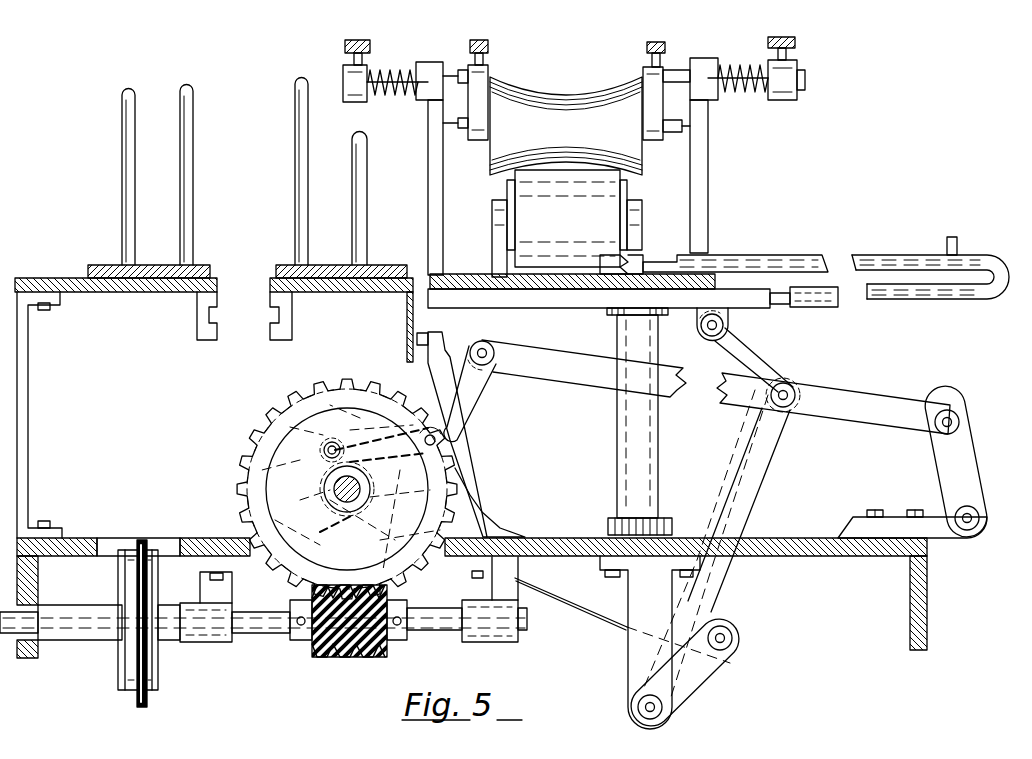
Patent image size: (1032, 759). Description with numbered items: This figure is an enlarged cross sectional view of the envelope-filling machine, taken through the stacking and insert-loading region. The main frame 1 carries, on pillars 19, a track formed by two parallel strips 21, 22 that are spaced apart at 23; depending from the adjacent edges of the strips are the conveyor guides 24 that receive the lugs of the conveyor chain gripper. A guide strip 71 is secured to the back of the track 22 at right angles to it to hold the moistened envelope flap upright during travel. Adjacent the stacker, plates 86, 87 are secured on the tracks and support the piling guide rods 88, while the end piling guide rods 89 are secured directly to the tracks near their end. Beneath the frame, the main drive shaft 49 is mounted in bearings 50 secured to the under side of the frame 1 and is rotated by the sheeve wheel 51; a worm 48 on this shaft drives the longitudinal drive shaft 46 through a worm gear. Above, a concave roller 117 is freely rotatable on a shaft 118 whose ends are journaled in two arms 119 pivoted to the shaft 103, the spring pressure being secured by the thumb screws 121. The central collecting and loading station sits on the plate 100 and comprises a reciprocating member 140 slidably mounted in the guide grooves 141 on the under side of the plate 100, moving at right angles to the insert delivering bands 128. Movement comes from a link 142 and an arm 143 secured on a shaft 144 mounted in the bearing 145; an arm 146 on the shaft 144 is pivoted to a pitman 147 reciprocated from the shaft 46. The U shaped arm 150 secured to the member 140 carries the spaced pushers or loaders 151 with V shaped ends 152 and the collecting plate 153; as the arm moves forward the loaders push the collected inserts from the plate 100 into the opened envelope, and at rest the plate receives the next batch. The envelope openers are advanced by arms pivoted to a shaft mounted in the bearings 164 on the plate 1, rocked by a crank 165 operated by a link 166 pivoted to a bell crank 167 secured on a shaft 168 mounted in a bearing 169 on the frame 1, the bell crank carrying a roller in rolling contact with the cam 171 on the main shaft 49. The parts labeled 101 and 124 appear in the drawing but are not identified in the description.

The main frame 1 is at (75, 540).
The pillar 19 is at (22, 398).
The parallel strip 21 is at (132, 293).
The parallel strip 22 is at (363, 293).
The space 23 is at (245, 279).
The conveyor guide 24 is at (270, 333).
The longitudinal drive shaft 46 is at (254, 427).
The worm 48 is at (331, 650).
The main drive shaft 49 is at (265, 628).
The bearing 50 is at (208, 640).
The sheeve wheel 51 is at (124, 667).
The guide strip 71 is at (408, 345).
The plate 86 is at (109, 265).
The plate 87 is at (377, 265).
The piling guide rod 88 is at (128, 146).
The end piling guide rod 89 is at (300, 126).
The plate 100 is at (490, 291).
The upright 101 is at (432, 161).
The shaft 103 is at (800, 82).
The concave roller 117 is at (566, 95).
The shaft 118 is at (680, 127).
The arm 119 is at (479, 91).
The thumb screw 121 is at (356, 41).
The bracket 124 is at (497, 247).
The insert delivering band 128 is at (567, 218).
The reciprocating member 140 is at (727, 315).
The guide groove 141 is at (568, 303).
The link 142 is at (757, 360).
The arm 143 is at (749, 489).
The shaft 144 is at (664, 708).
The bearing 145 is at (633, 640).
The arm 146 is at (700, 670).
The pitman 147 is at (568, 591).
The U shaped arm 150 is at (838, 297).
The pusher 151 is at (640, 265).
The V shaped end 152 is at (602, 291).
The collecting plate 153 is at (863, 253).
The bearing 164 is at (890, 524).
The crank 165 is at (950, 452).
The link 166 is at (723, 400).
The bell crank 167 is at (470, 392).
The shaft 168 is at (445, 441).
The bearing 169 is at (467, 468).
The cam 171 is at (264, 490).